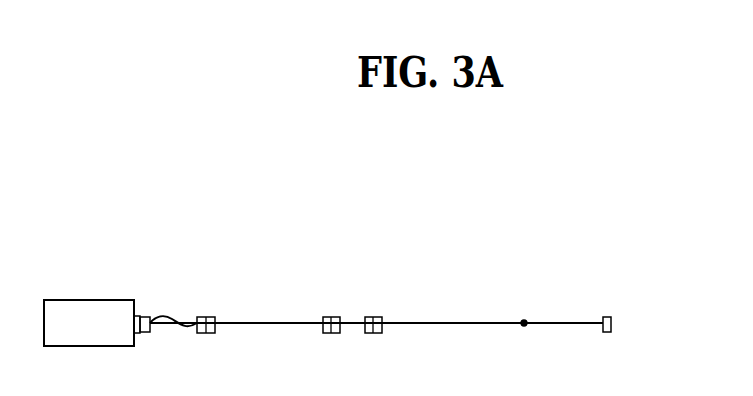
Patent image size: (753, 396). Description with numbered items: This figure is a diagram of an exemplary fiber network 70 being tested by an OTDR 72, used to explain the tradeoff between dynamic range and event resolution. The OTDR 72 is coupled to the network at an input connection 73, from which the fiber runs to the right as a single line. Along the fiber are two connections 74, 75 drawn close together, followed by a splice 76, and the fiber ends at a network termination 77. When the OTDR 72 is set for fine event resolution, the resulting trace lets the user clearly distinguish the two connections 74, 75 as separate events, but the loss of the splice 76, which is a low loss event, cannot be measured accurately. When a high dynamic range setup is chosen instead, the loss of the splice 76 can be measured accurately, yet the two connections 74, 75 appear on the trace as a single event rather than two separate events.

The fiber network 70 is at (152, 232).
The OTDR 72 is at (73, 300).
The input connection 73 is at (203, 317).
The connection 74 is at (325, 317).
The connection 75 is at (377, 317).
The splice 76 is at (524, 321).
The network termination 77 is at (608, 317).